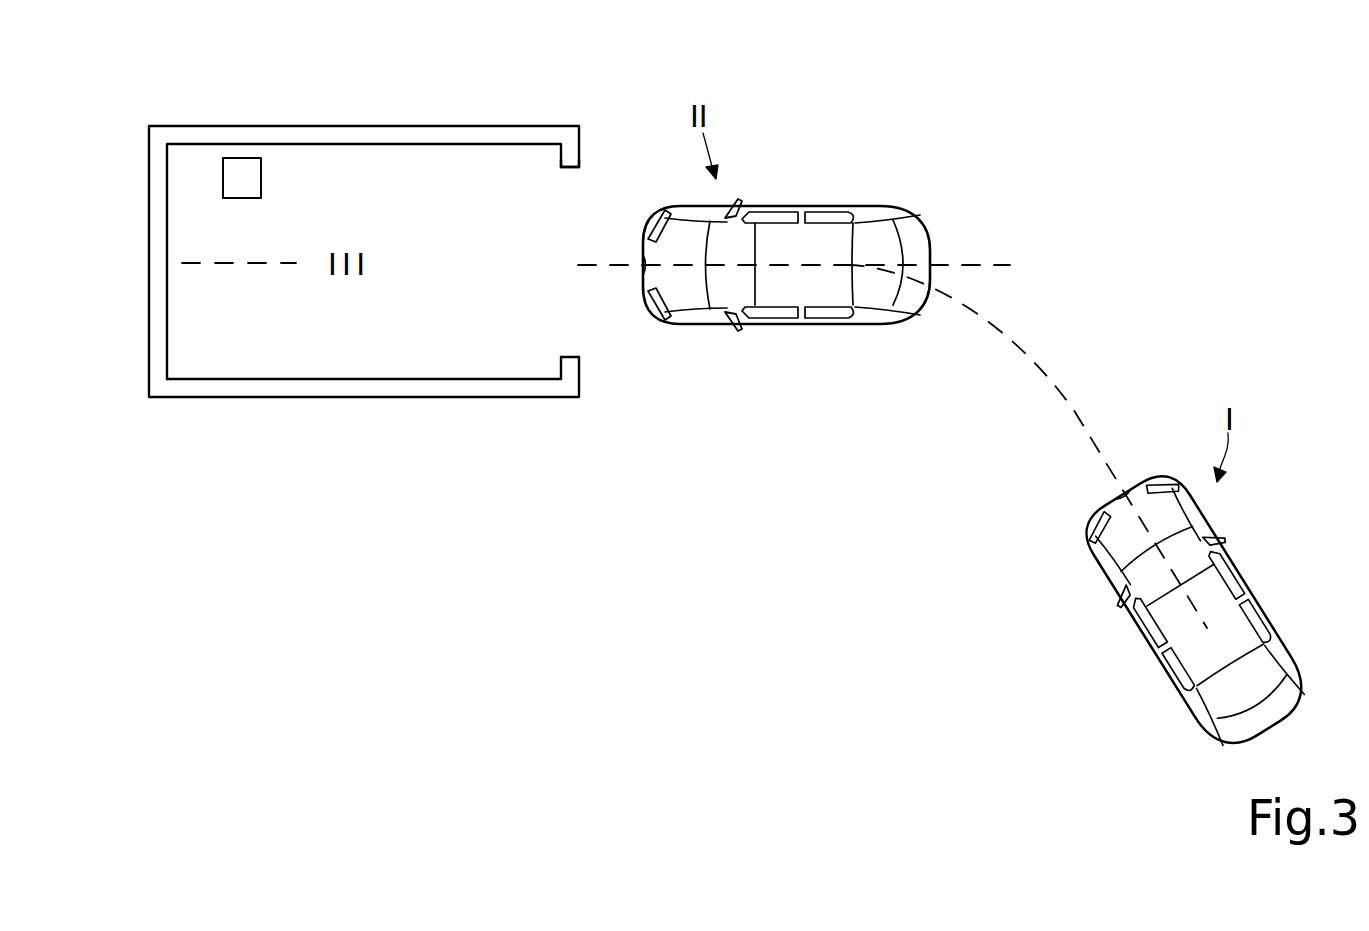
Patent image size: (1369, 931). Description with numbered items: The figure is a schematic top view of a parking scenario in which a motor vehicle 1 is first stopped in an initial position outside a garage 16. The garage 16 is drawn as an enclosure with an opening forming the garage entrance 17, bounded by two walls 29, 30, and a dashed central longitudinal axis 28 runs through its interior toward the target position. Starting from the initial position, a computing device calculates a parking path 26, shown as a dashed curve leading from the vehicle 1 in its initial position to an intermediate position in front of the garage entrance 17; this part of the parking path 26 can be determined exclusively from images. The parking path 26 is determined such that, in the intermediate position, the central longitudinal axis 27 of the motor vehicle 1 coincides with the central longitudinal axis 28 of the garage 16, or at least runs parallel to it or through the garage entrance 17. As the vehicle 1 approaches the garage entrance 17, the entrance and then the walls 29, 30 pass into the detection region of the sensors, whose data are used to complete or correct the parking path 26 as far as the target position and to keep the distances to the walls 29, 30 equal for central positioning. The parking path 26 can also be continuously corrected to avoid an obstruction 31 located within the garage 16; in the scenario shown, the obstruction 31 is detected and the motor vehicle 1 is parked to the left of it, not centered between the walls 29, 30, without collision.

The motor vehicle 1 is at (817, 203).
The garage 16 is at (365, 207).
The garage entrance 17 is at (572, 168).
The parking path 26 is at (1060, 390).
The central longitudinal axis of the motor vehicle 27 is at (1000, 262).
The central longitudinal axis of the garage 28 is at (257, 265).
The wall of the garage 29 is at (452, 378).
The wall of the garage 30 is at (433, 145).
The obstruction 31 is at (238, 165).